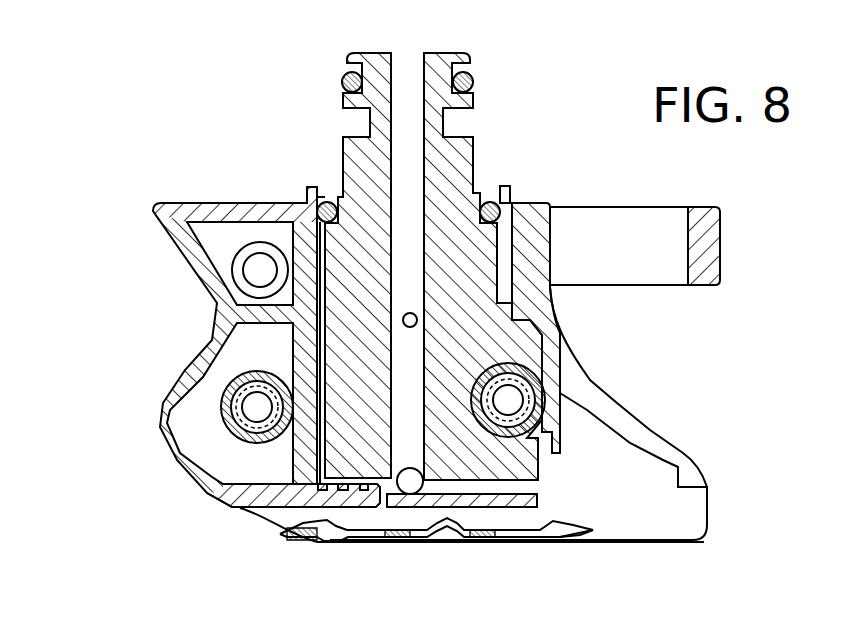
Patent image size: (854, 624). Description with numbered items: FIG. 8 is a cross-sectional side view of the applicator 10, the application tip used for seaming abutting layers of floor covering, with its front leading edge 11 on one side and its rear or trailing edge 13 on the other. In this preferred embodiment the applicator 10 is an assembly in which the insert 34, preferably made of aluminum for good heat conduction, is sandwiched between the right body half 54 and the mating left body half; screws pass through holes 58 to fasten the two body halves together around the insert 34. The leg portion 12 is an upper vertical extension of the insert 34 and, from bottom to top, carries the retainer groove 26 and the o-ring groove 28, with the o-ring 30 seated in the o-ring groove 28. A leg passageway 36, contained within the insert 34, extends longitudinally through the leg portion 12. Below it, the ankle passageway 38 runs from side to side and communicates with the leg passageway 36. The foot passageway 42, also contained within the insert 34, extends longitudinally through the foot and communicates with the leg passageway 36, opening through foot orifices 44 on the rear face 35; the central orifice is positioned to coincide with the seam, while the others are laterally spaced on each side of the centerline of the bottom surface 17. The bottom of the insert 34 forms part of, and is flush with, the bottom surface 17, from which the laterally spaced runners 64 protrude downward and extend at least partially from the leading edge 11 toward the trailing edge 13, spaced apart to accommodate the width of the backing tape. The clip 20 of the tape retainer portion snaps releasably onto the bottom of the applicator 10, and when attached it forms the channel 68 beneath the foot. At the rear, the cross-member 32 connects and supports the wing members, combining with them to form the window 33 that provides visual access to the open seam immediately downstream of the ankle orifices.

The applicator 10 is at (196, 152).
The front leading edge 11 is at (135, 347).
The leg portion 12 is at (342, 147).
The rear or trailing edge 13 is at (720, 347).
The bottom surface 17 is at (273, 508).
The clip 20 is at (393, 540).
The retainer groove 26 is at (452, 123).
The o-ring groove 28 is at (342, 74).
The o-ring 30 is at (475, 82).
The cross-member 32 is at (722, 228).
The window 33 is at (640, 230).
The insert 34 is at (453, 178).
The rear face 35 is at (538, 470).
The leg passageway 36 is at (413, 70).
The ankle passageway 38 is at (415, 314).
The foot passageway 42 is at (478, 490).
The foot orifices 44 is at (527, 487).
The right body half 54 is at (160, 242).
The holes 58 is at (257, 407).
The runners 64 is at (315, 540).
The channel 68 is at (307, 513).